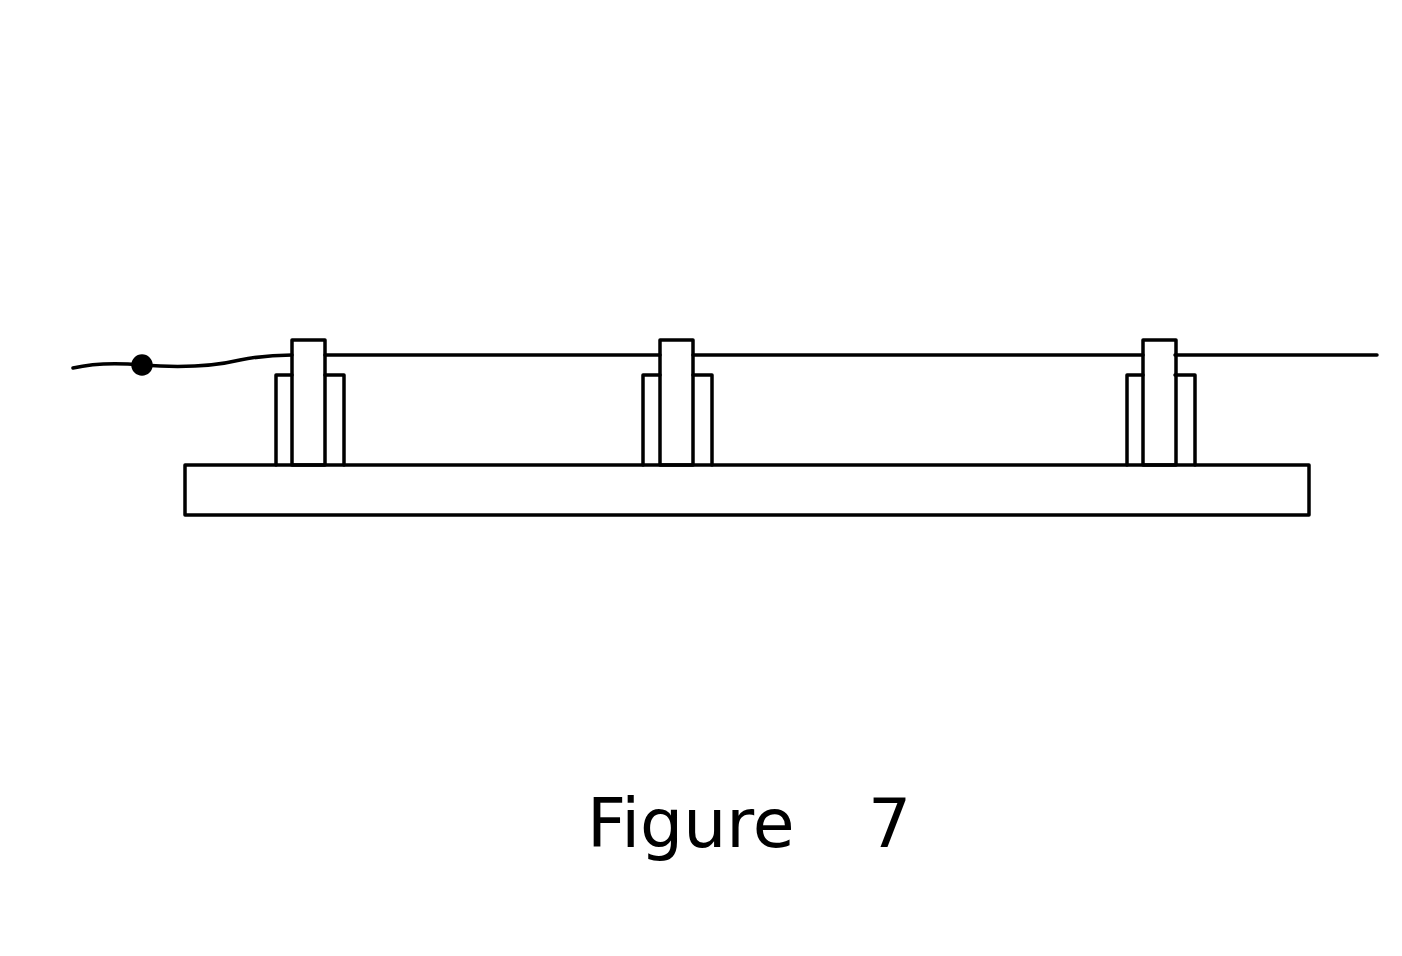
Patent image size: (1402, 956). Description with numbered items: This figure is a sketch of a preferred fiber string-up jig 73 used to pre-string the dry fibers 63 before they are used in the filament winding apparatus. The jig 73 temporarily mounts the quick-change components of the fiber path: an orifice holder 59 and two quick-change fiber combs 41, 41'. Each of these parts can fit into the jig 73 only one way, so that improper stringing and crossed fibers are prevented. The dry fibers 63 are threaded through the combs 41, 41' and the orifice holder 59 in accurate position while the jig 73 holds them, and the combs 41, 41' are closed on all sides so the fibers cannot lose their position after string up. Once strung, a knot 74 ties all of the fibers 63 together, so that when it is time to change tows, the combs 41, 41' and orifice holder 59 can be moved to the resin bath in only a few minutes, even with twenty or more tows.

The fiber comb 41' is at (322, 261).
The fiber comb 41 is at (1190, 304).
The orifice holder 59 is at (678, 338).
The dry fibers 63 is at (1278, 355).
The fiber string-up jig 73 is at (968, 515).
The junction 74 is at (142, 362).